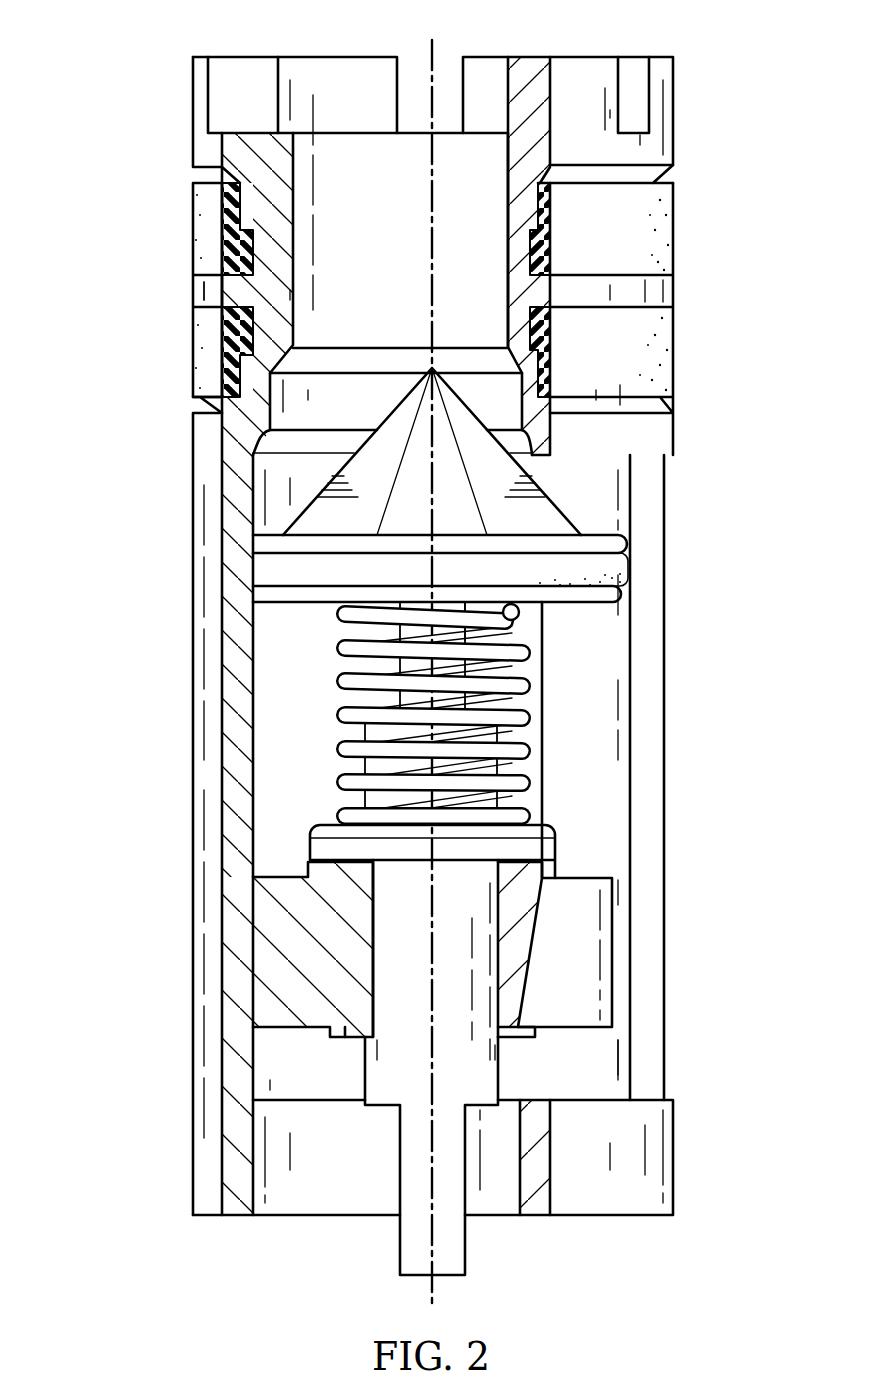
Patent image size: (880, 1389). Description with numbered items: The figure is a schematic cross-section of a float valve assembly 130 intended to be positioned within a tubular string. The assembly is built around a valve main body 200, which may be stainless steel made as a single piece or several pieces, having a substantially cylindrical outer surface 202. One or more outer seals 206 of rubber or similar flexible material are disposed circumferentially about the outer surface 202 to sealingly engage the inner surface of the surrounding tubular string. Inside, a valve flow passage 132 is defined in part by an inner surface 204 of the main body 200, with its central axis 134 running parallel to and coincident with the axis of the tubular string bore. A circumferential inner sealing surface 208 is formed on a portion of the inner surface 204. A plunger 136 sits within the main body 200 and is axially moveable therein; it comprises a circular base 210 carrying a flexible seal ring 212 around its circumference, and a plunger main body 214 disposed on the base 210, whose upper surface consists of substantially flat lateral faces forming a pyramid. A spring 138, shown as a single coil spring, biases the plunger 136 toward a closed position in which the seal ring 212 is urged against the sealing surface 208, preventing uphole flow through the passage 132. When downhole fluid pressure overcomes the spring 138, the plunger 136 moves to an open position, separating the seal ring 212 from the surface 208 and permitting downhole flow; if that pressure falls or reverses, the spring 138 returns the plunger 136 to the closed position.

The float valve assembly 130 is at (97, 68).
The valve flow passage 132 is at (285, 768).
The central axis 134 is at (430, 191).
The plunger 136 is at (373, 400).
The spring 138 is at (345, 712).
The valve main body 200 is at (193, 989).
The outer surface 202 is at (192, 106).
The inner surface 204 is at (600, 684).
The outer seals 206 is at (673, 226).
The circumferential inner sealing surface 208 is at (253, 498).
The circular base 210 is at (305, 606).
The seal ring 212 is at (562, 590).
The plunger main body 214 is at (557, 511).